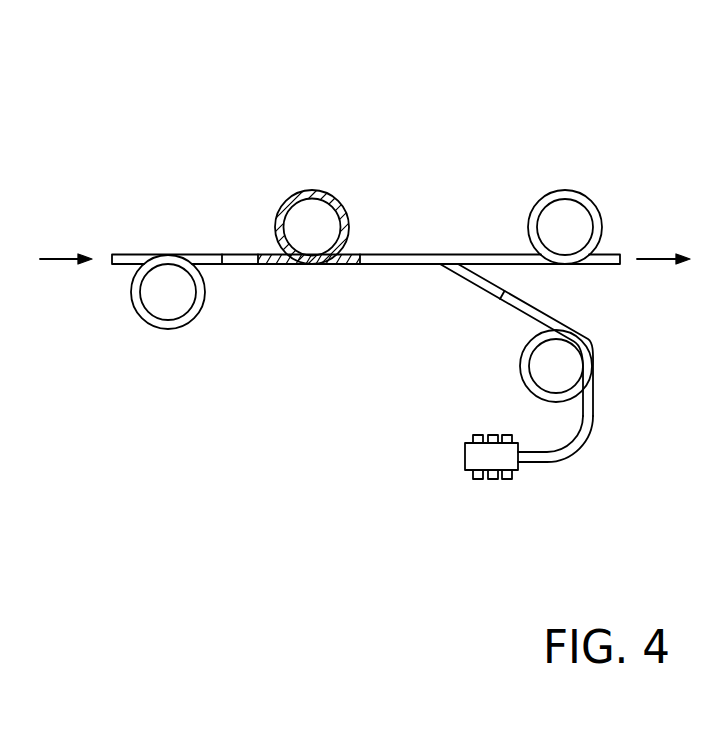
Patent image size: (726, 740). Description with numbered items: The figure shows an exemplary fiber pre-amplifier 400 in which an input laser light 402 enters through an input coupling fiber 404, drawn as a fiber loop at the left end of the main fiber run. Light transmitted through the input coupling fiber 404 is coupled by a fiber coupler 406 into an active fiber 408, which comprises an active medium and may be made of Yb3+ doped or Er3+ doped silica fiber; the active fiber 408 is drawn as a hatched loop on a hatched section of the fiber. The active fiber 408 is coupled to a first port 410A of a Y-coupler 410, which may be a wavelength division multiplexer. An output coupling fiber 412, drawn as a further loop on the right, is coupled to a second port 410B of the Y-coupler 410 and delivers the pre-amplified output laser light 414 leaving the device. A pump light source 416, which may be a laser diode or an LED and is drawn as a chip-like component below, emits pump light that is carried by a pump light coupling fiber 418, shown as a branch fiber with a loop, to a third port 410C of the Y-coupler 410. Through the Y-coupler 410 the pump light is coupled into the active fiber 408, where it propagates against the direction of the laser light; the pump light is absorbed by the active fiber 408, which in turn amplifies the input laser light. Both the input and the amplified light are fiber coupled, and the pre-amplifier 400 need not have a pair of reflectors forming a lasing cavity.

The fiber pre-amplifier 400 is at (160, 76).
The input laser light 402 is at (56, 258).
The input coupling fiber 404 is at (167, 331).
The fiber coupler 406 is at (238, 254).
The active fiber 408 is at (326, 190).
The Y-coupler 410 is at (418, 254).
The first port 410A is at (365, 254).
The second port 410B is at (509, 254).
The third port 410C is at (498, 300).
The output coupling fiber 412 is at (584, 192).
The pre-amplified output laser light 414 is at (654, 258).
The pump light source 416 is at (466, 472).
The pump light coupling fiber 418 is at (589, 352).